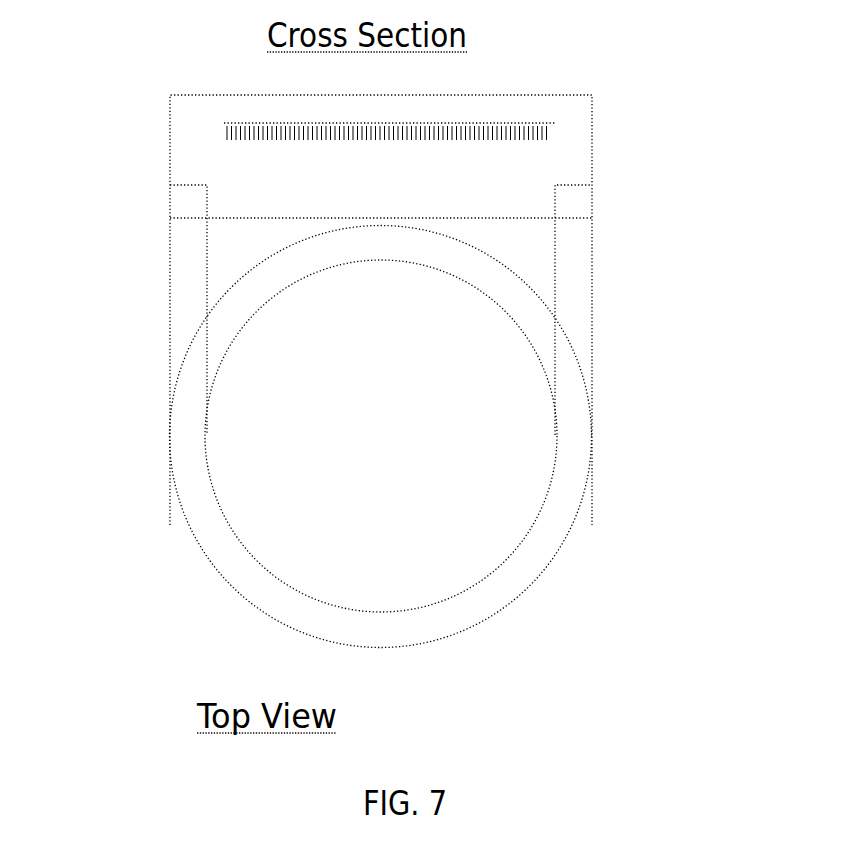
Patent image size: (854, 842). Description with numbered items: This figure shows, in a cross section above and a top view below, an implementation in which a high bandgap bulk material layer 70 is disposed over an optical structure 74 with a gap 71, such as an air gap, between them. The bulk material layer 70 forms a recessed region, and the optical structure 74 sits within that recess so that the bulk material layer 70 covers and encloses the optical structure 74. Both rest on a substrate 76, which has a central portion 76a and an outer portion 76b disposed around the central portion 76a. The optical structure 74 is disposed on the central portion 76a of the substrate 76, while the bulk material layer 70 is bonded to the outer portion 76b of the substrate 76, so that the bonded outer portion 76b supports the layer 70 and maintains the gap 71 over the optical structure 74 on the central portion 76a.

The bulk material layer 70 is at (202, 97).
The gap 71 is at (224, 127).
The optical structure 74 is at (222, 140).
The substrate 76 is at (430, 203).
The central portion 76a is at (487, 194).
The outer portion 76b is at (183, 200).